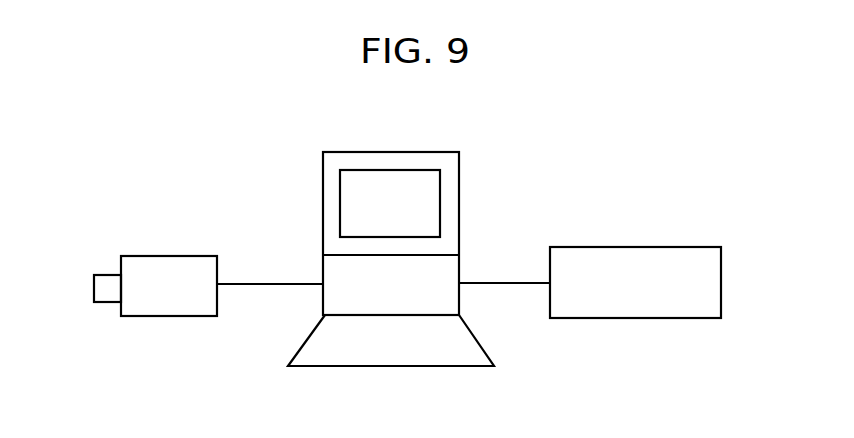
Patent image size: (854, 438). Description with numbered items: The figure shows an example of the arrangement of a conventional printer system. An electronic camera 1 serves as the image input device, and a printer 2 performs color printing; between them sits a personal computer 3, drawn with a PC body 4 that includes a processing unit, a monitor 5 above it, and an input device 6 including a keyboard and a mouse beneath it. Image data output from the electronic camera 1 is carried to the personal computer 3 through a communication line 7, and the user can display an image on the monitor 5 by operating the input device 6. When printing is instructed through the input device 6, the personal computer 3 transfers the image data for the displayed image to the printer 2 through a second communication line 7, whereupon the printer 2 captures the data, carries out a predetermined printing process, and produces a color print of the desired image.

The electronic camera 1 is at (156, 256).
The printer 2 is at (618, 247).
The personal computer 3 is at (395, 148).
The PC body 4 is at (323, 272).
The monitor 5 is at (323, 190).
The input device 6 is at (395, 366).
The communication line 7 is at (261, 284).